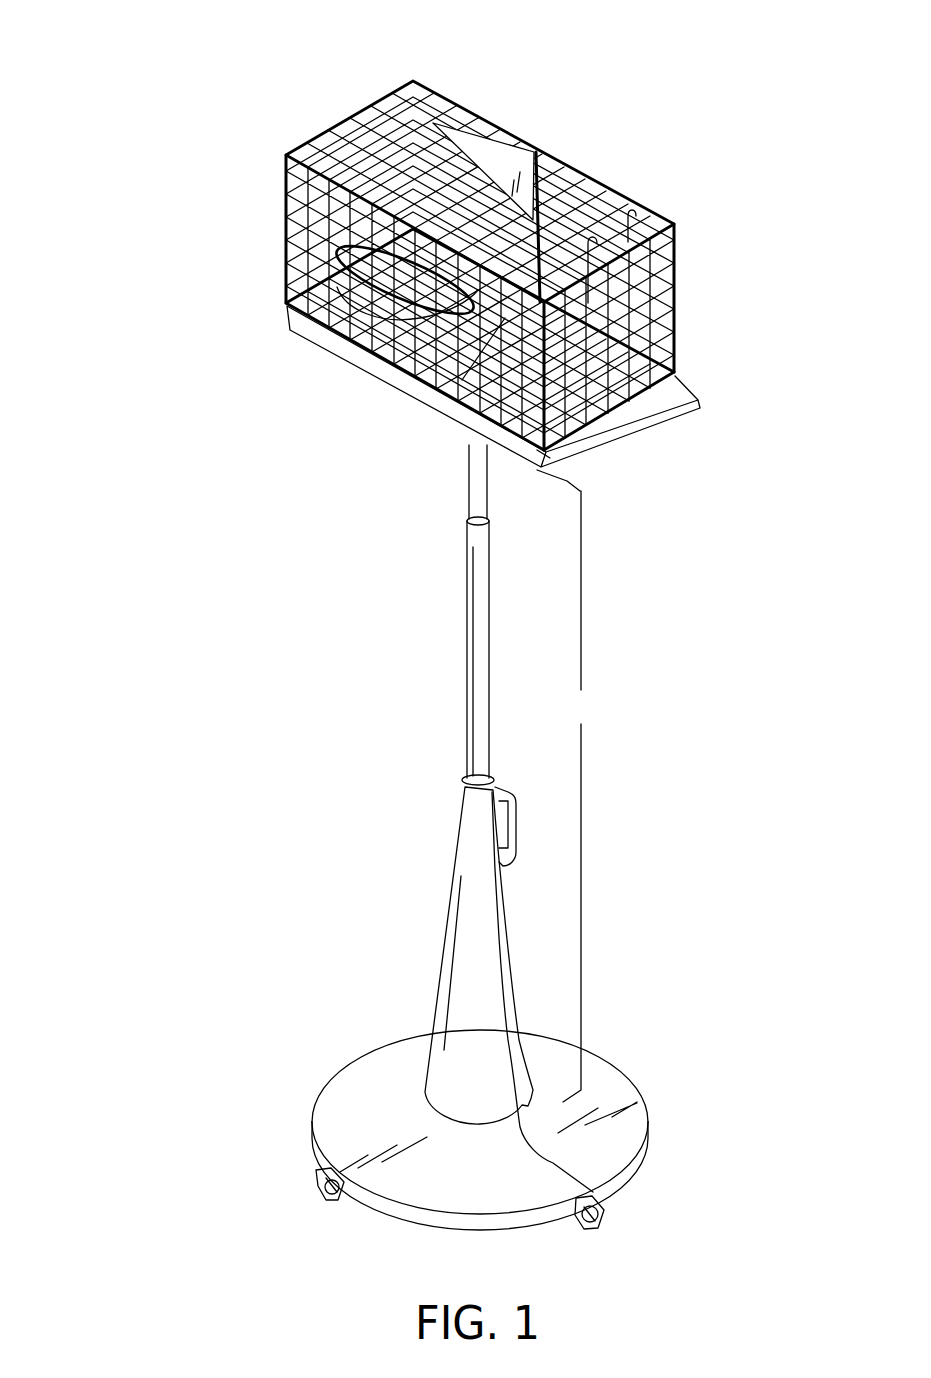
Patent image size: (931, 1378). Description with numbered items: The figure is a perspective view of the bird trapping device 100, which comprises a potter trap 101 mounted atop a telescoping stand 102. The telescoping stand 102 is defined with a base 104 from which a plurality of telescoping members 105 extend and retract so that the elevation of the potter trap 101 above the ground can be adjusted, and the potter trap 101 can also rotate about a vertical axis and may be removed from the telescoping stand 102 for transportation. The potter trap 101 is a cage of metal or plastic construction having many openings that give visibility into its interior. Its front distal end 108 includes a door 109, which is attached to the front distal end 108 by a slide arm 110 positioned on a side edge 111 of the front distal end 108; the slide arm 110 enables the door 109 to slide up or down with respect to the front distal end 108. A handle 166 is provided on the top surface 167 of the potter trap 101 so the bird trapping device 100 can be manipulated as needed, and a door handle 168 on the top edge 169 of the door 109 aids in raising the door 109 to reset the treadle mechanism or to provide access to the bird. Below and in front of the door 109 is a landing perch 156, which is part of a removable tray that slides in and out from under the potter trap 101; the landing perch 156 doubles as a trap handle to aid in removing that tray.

The bird trapping device 100 is at (150, 182).
The potter trap 101 is at (633, 207).
The telescoping stand 102 is at (580, 690).
The base 104 is at (623, 1102).
The telescoping members 105 is at (477, 833).
The front distal end 108 is at (537, 470).
The door 109 is at (677, 287).
The slide arm 110 is at (547, 393).
The side edge 111 is at (537, 434).
The landing perch 156 is at (637, 438).
The handle 166 is at (427, 127).
The top surface 167 is at (357, 137).
The door handle 168 is at (607, 223).
The top edge 169 is at (665, 220).